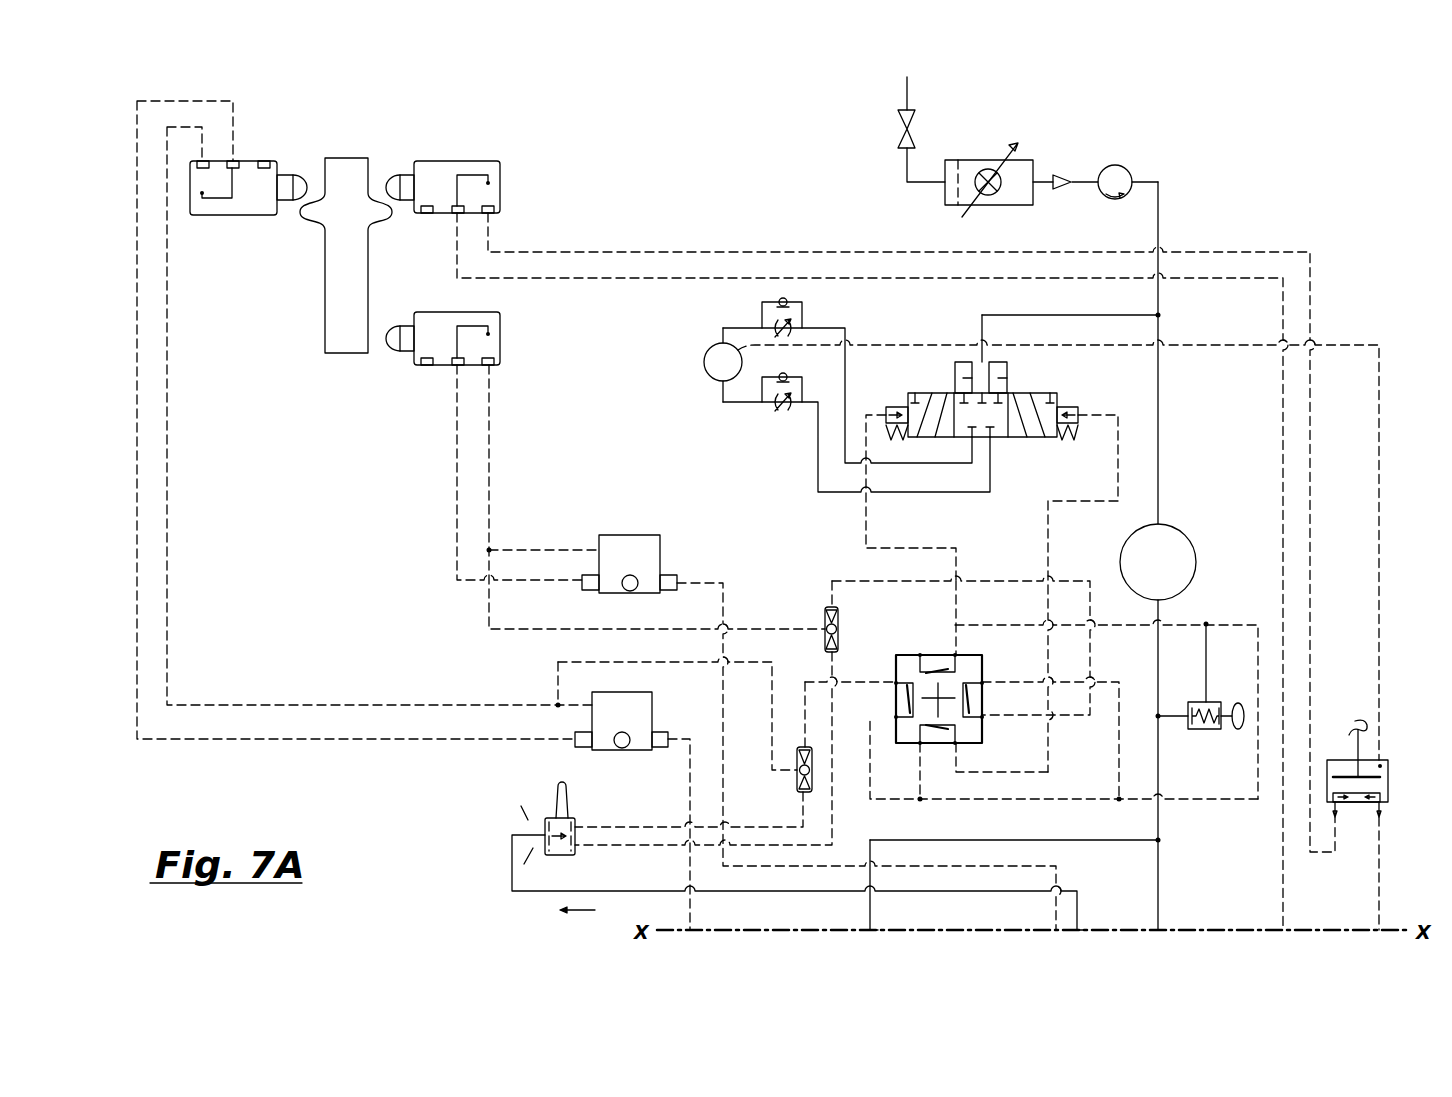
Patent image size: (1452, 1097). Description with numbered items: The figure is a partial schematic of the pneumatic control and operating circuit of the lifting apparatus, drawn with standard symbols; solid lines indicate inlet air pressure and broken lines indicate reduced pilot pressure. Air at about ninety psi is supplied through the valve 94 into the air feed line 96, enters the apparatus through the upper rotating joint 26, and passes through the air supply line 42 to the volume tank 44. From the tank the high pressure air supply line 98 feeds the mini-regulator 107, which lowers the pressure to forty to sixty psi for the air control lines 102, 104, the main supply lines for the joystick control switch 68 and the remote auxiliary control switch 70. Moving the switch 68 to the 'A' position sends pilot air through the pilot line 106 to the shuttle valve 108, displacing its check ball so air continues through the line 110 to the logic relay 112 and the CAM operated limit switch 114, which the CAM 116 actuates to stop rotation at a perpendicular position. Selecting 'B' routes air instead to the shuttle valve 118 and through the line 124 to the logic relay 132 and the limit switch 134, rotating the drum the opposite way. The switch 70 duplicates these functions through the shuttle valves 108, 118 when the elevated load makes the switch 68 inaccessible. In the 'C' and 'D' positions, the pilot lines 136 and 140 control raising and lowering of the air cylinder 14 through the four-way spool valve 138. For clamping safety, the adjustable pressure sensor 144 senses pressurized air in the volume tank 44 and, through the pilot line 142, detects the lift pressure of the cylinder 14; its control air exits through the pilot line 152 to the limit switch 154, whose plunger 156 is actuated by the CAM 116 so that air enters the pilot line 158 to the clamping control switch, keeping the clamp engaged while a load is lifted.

The air cylinder 14 is at (712, 375).
The upper rotating joint 26 is at (1128, 170).
The air supply line 42 is at (1160, 197).
The volume tank 44 is at (1171, 522).
The control switch 68 is at (970, 655).
The control switch 70 is at (550, 818).
The valve 94 is at (980, 160).
The air feed line 96 is at (1080, 180).
The high pressure air supply line 98 is at (1157, 693).
The air control line 102 is at (1188, 800).
The air control line 104 is at (1237, 623).
The pilot line 106 is at (877, 683).
The mini-regulator 107 is at (1197, 731).
The shuttle valve 108 is at (787, 780).
The line 110 is at (558, 662).
The logic relay 112 is at (603, 750).
The limit switch 114 is at (305, 197).
The CAM 116 is at (328, 275).
The shuttle valve 118 is at (825, 620).
The line 124 is at (504, 630).
The logic relay 132 is at (628, 535).
The limit switch 134 is at (418, 368).
The pilot line 136 is at (902, 548).
The four-way spool valve 138 is at (1040, 392).
The pilot line 140 is at (1115, 453).
The pilot line 142 is at (1382, 445).
The pressure sensor 144 is at (1333, 758).
The pilot line 152 is at (1213, 252).
The limit switch 154 is at (490, 160).
The plunger 156 is at (390, 172).
The pilot line 158 is at (975, 278).